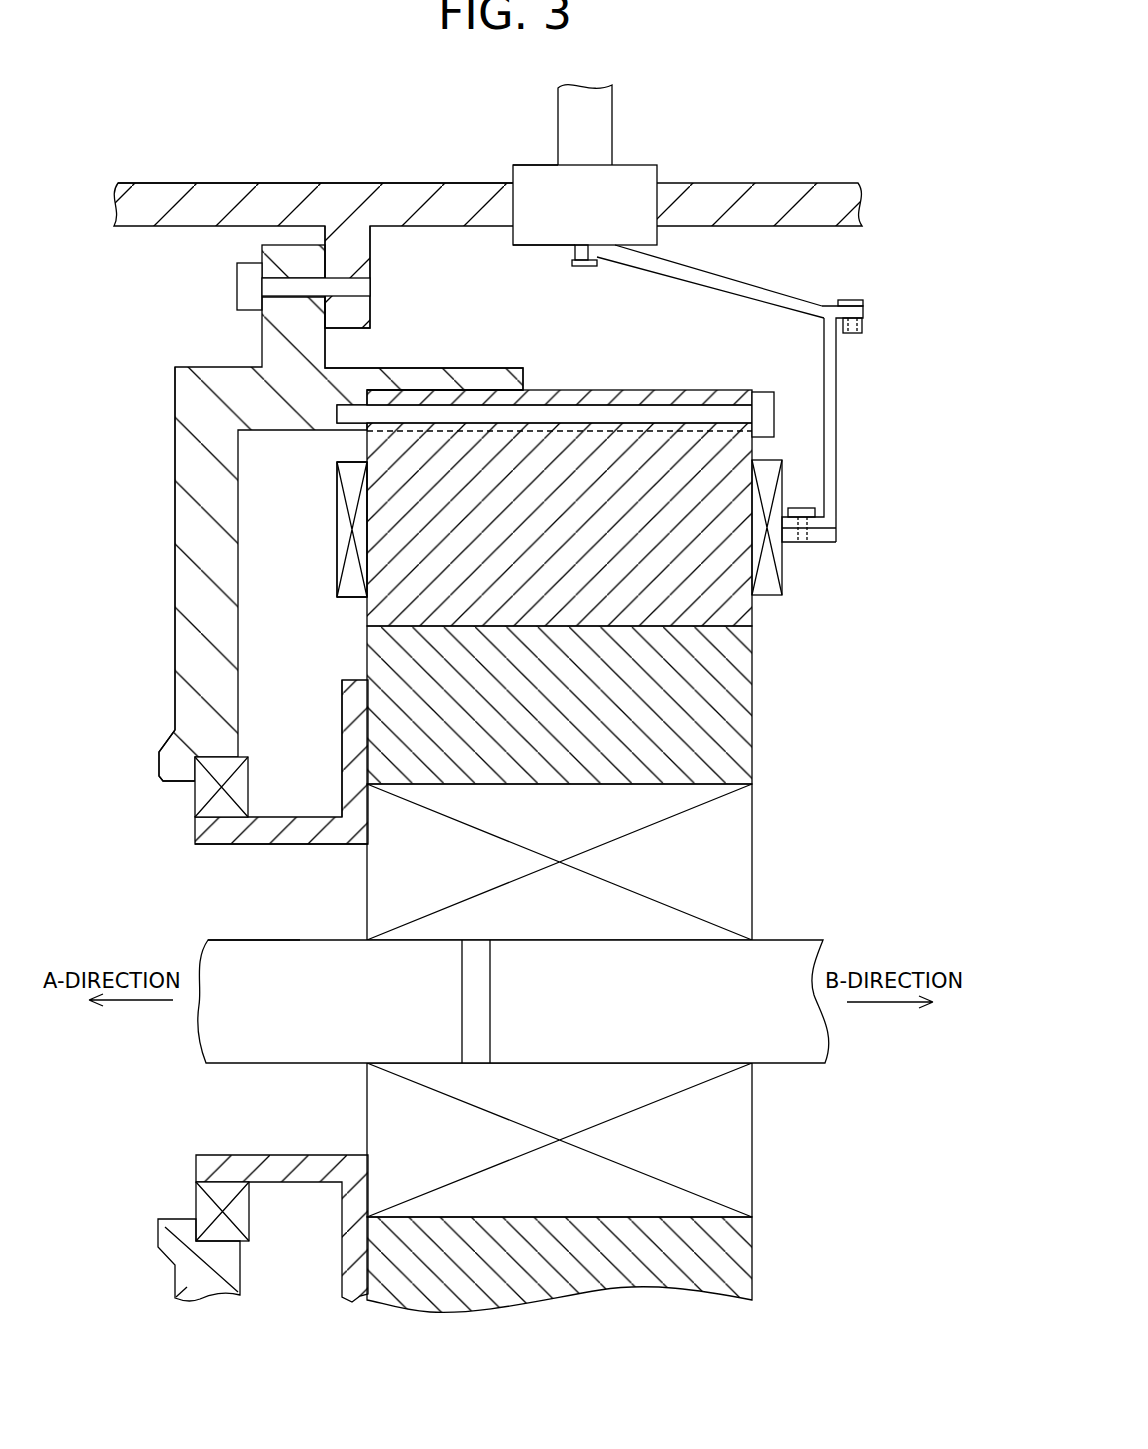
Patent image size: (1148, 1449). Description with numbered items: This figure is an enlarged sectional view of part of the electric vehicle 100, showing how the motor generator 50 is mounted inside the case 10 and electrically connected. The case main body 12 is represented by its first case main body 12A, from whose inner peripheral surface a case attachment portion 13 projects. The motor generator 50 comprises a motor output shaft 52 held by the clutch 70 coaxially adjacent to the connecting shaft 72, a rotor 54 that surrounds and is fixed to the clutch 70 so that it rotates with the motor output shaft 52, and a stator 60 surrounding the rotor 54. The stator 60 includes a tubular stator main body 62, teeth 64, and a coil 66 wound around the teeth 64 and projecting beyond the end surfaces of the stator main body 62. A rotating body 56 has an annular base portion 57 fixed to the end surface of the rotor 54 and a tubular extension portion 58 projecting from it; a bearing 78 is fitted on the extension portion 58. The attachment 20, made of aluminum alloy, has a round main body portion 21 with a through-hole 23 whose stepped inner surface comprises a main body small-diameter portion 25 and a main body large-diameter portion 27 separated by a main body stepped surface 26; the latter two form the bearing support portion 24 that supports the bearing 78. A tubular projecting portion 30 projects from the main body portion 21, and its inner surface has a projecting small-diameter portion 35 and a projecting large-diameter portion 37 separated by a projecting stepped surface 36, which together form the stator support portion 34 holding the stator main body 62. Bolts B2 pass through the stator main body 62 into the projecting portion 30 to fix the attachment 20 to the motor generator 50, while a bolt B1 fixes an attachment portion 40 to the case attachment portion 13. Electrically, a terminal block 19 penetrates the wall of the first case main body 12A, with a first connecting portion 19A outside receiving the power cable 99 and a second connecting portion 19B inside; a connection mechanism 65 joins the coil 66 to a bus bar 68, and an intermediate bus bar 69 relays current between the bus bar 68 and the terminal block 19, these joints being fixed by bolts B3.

The electric vehicle 100 is at (835, 74).
The case 10 is at (818, 161).
The case main body 12 is at (740, 183).
The first case main body 12A is at (422, 183).
The case attachment portion 13 is at (370, 240).
The terminal block 19 is at (630, 162).
The first connecting portion 19A is at (535, 165).
The second connecting portion 19B is at (542, 246).
The power cable 99 is at (613, 105).
The attachment portion 40 is at (262, 256).
The bolt B1 is at (237, 285).
The bolt B2 is at (763, 392).
The bolt B3 is at (586, 268).
The attachment 20 is at (128, 506).
The main body portion 21 is at (173, 628).
The through-hole 23 is at (173, 783).
The bearing support portion 24 is at (325, 885).
The main body small-diameter portion 25 is at (180, 782).
The main body stepped surface 26 is at (200, 775).
The main body large-diameter portion 27 is at (250, 780).
The projecting portion 30 is at (396, 364).
The stator support portion 34 is at (398, 308).
The projecting small-diameter portion 35 is at (300, 436).
The projecting stepped surface 36 is at (388, 396).
The projecting large-diameter portion 37 is at (525, 396).
The motor generator 50 is at (826, 636).
The motor output shaft 52 is at (800, 938).
The rotor 54 is at (752, 700).
The rotating body 56 is at (108, 1220).
The base portion 57 is at (343, 1256).
The extension portion 58 is at (196, 1227).
The stator 60 is at (280, 478).
The stator main body 62 is at (367, 444).
The teeth 64 is at (367, 612).
The coil 66 is at (337, 528).
The connection mechanism 65 is at (822, 543).
The bus bar 68 is at (838, 432).
The intermediate bus bar 69 is at (718, 272).
The clutch 70 is at (752, 860).
The connecting shaft 72 is at (258, 938).
The bearing 78 is at (196, 1205).